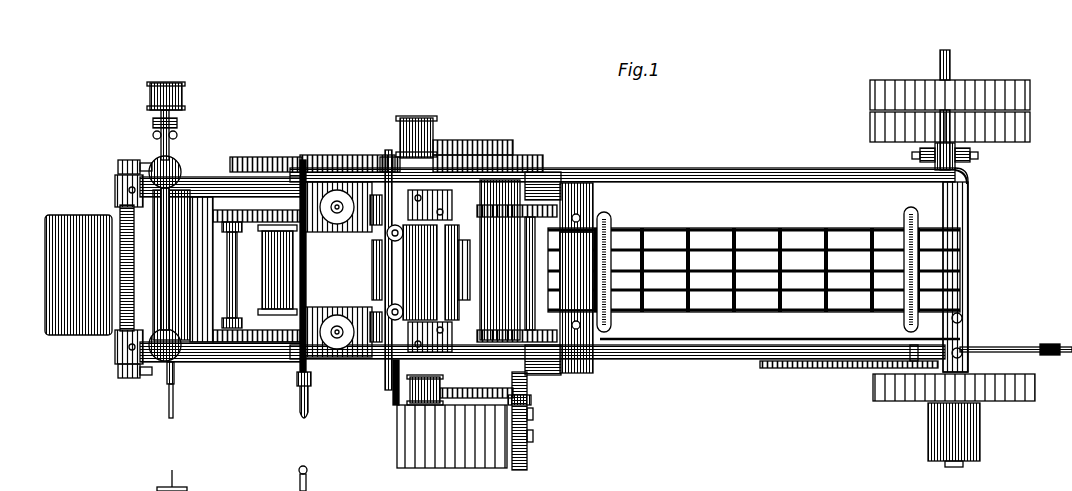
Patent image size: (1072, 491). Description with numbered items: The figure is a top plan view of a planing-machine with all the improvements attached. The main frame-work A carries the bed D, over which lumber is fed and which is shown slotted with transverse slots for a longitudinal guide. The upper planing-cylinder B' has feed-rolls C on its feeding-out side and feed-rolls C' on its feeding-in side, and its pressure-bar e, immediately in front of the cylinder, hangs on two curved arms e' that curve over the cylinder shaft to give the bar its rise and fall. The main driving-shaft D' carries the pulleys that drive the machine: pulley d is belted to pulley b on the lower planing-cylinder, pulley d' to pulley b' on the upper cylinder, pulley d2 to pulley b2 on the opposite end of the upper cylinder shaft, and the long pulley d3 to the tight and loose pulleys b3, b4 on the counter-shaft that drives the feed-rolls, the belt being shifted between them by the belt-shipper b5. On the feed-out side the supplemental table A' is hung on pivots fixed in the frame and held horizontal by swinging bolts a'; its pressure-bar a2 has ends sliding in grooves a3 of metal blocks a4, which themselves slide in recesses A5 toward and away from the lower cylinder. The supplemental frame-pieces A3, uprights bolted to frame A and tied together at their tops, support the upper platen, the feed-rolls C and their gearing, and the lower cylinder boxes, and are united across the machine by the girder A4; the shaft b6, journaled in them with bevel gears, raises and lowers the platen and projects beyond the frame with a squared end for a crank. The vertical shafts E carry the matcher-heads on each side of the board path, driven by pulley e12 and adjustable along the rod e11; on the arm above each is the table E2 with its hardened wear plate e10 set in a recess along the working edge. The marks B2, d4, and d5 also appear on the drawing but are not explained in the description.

The main frame-work A is at (629, 249).
The supplemental table A' is at (123, 296).
The supplemental frame-piece A3 is at (208, 173).
The girder A4 is at (256, 270).
The recess A5 is at (560, 170).
The swinging bolt a' is at (135, 274).
The pressure-bar a2 is at (100, 253).
The groove a3 is at (116, 202).
The metal block a4 is at (115, 206).
The pulley b is at (173, 211).
The pulley b' is at (454, 118).
The pulley b2 is at (342, 380).
The tight pulley b3 is at (535, 418).
The loose pulley b4 is at (535, 445).
The belt-shipper b5 is at (525, 470).
The shaft b6 is at (173, 420).
The upper planing-cylinder B' is at (414, 303).
The shaft pulley B2 is at (318, 392).
The feed-roll C is at (257, 227).
The feed-roll C' is at (500, 224).
The bed D is at (754, 269).
The main driving-shaft D' is at (990, 109).
The pulley d is at (969, 240).
The pulley d' is at (969, 127).
The pulley d2 is at (975, 360).
The long pulley d3 is at (988, 440).
The bearing d4 is at (975, 172).
The collar d5 is at (985, 150).
The vertical shaft E is at (336, 165).
The table E2 is at (322, 165).
The pressure-bar e is at (461, 270).
The curved arm e' is at (383, 478).
The hardened metal plate e10 is at (325, 238).
The rod e11 is at (358, 273).
The pulley e12 is at (331, 312).